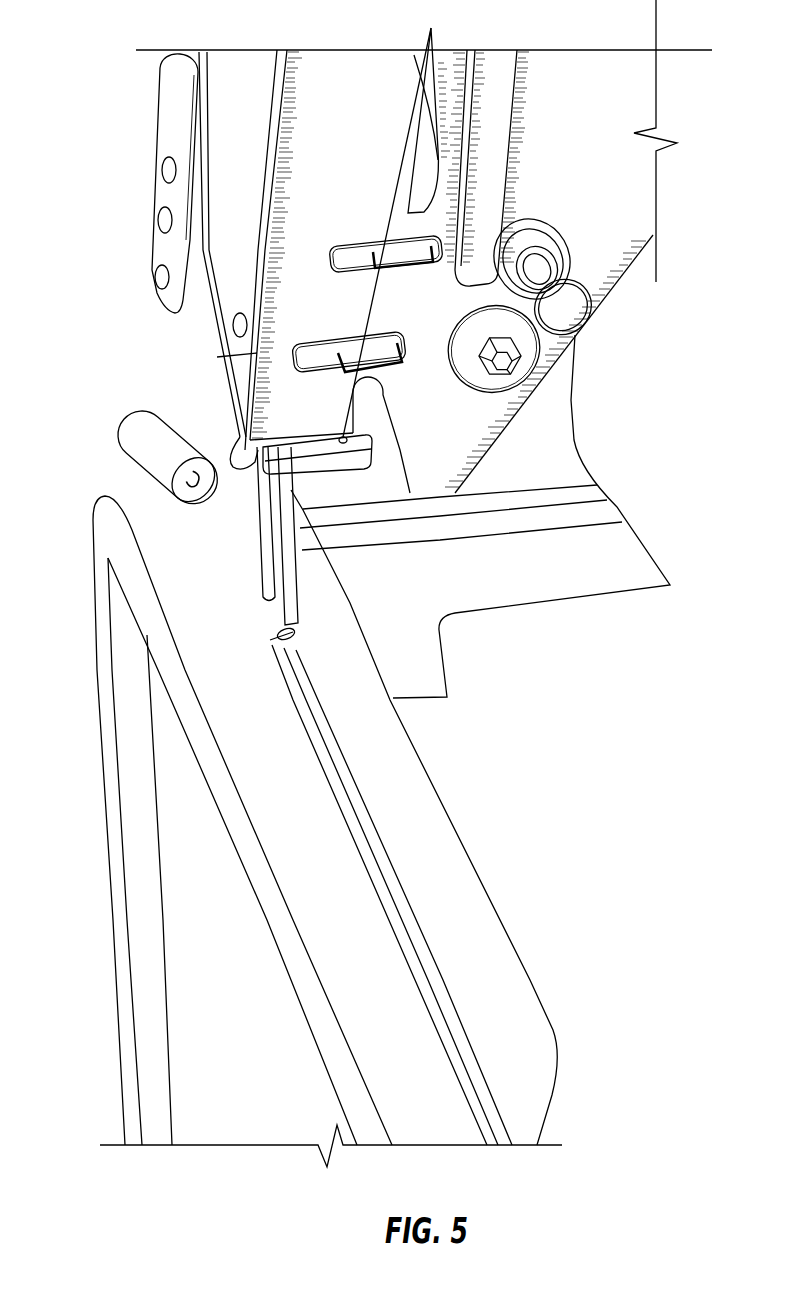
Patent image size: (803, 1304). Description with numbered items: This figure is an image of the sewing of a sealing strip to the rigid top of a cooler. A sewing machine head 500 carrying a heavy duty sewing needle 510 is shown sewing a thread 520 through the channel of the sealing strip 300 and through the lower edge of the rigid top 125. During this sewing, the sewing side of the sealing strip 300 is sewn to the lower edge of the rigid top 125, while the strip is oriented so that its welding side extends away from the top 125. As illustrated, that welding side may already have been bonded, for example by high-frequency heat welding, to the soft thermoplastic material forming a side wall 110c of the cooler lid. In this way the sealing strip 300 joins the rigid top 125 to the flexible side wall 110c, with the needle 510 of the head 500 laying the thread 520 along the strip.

The sewing machine head 500 is at (370, 122).
The thread 520 is at (372, 322).
The sewing needle 510 is at (277, 534).
The rigid top 125 is at (110, 535).
The sealing strip 300 is at (330, 760).
The side wall 110c is at (428, 807).